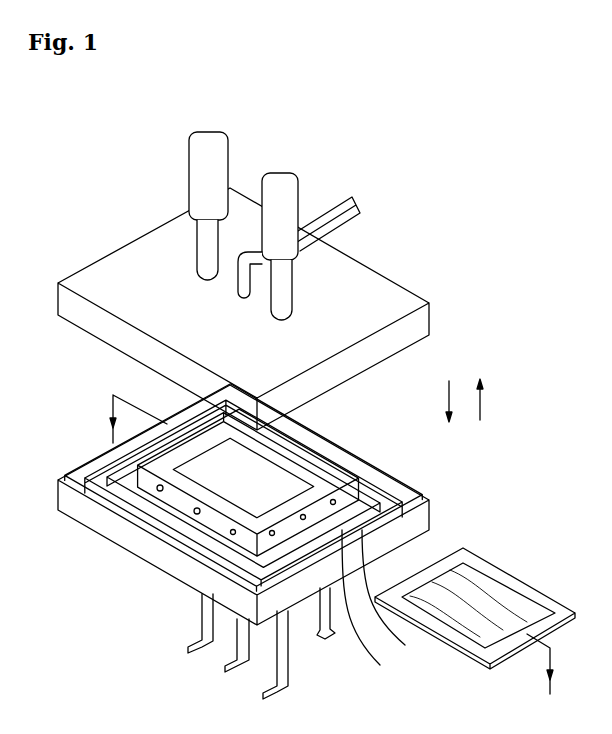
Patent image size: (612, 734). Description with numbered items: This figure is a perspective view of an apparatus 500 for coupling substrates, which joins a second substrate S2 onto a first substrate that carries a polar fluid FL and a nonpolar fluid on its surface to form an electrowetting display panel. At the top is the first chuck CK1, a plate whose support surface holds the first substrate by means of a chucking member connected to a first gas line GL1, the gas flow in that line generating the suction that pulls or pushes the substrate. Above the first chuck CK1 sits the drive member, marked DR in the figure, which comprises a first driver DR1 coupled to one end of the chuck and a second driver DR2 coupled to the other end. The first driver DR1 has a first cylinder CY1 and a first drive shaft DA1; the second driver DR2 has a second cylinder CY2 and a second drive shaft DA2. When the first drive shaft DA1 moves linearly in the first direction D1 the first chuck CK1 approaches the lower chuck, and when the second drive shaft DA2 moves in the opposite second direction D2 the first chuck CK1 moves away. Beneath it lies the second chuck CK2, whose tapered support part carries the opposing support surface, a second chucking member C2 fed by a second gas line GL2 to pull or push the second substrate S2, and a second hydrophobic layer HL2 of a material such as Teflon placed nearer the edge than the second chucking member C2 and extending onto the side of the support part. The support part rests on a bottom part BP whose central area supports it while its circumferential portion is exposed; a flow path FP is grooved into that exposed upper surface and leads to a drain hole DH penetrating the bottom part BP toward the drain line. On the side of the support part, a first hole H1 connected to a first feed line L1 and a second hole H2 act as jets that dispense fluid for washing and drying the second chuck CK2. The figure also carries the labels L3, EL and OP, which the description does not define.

The apparatus for coupling substrates 500 is at (427, 136).
The driver DR is at (188, 148).
The second cylinder CY2 is at (190, 182).
The second driver DR2 is at (154, 206).
The second drive shaft DA2 is at (200, 240).
The first gas line GL1 is at (331, 216).
The first cylinder CY1 is at (300, 233).
The first driver DR1 is at (346, 246).
The first drive shaft DA1 is at (293, 290).
The first chuck CK1 is at (430, 318).
The first direction D1 is at (449, 408).
The second direction D2 is at (480, 392).
The second chucking member C2 is at (380, 452).
The second hydrophobic layer HL2 is at (400, 478).
The second chuck CK2 is at (287, 504).
The bottom part BP is at (432, 512).
The first hole H1 is at (158, 490).
The second hole H2 is at (195, 512).
The first feed line L1 is at (190, 647).
The second gas line GL2 is at (225, 667).
The third leg L3 is at (264, 693).
The elastic member EL is at (375, 659).
The flow path FP is at (402, 634).
The opening OP is at (418, 640).
The drain hole DH is at (425, 620).
The polar fluid FL is at (507, 570).
The second substrate S2 is at (475, 605).